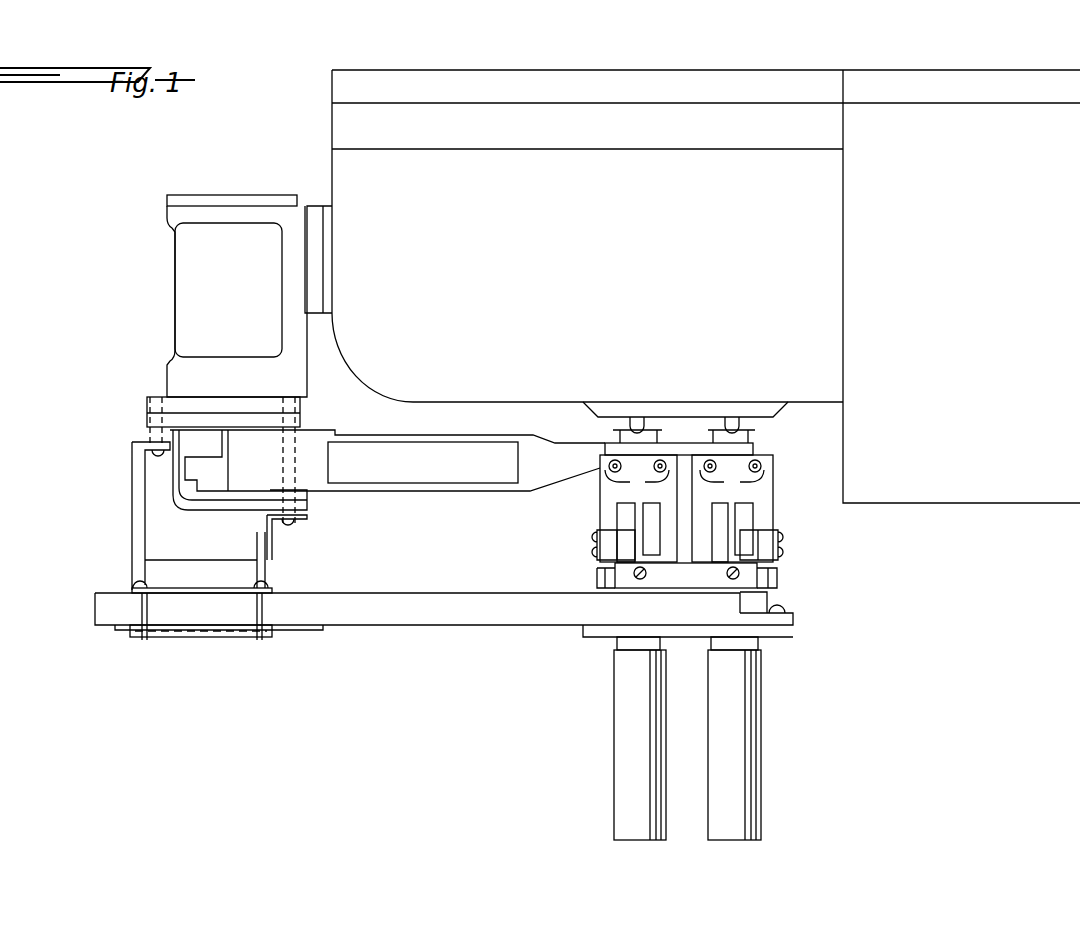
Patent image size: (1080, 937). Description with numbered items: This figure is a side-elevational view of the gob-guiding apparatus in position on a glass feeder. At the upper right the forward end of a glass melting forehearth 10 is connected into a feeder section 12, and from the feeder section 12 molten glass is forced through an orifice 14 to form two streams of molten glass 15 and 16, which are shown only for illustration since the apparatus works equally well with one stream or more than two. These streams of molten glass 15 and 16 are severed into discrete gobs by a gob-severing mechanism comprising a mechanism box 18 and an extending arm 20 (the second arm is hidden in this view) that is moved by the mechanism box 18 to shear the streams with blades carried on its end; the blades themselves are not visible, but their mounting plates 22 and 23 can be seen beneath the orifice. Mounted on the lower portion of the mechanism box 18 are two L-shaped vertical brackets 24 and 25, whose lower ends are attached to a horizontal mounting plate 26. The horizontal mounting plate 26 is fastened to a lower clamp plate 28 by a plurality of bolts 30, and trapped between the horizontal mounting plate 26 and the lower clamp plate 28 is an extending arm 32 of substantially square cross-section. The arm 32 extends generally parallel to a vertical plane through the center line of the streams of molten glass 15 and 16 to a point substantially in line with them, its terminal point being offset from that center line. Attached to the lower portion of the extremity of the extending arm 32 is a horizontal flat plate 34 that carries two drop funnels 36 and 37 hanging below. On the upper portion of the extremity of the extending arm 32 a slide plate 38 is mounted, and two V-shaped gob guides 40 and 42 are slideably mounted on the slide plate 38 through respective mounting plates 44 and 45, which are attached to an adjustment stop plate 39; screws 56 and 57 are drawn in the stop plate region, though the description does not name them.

The glass melting forehearth 10 is at (1008, 485).
The feeder section 12 is at (664, 260).
The orifice 14 is at (680, 408).
The stream of molten glass 15 is at (640, 425).
The stream of molten glass 16 is at (733, 428).
The mechanism box 18 is at (222, 195).
The extending arm 20 is at (413, 488).
The mounting plate 22 is at (615, 437).
The mounting plate 23 is at (750, 440).
The L-shaped vertical bracket 24 is at (275, 565).
The L-shaped vertical bracket 25 is at (135, 525).
The horizontal mounting plate 26 is at (272, 590).
The lower clamp plate 28 is at (215, 637).
The bolts 30 is at (140, 608).
The extending arm 32 is at (397, 625).
The horizontal flat plate 34 is at (793, 632).
The drop funnel 36 is at (748, 748).
The drop funnel 37 is at (625, 748).
The slide plate 38 is at (745, 595).
The adjustment stop plate 39 is at (760, 565).
The V-shaped gob guide 40 is at (773, 477).
The V-shaped gob guide 42 is at (598, 503).
The mounting plate 44 is at (755, 510).
The mounting plate 45 is at (605, 535).
The screw 56 is at (633, 574).
The screw 57 is at (740, 578).